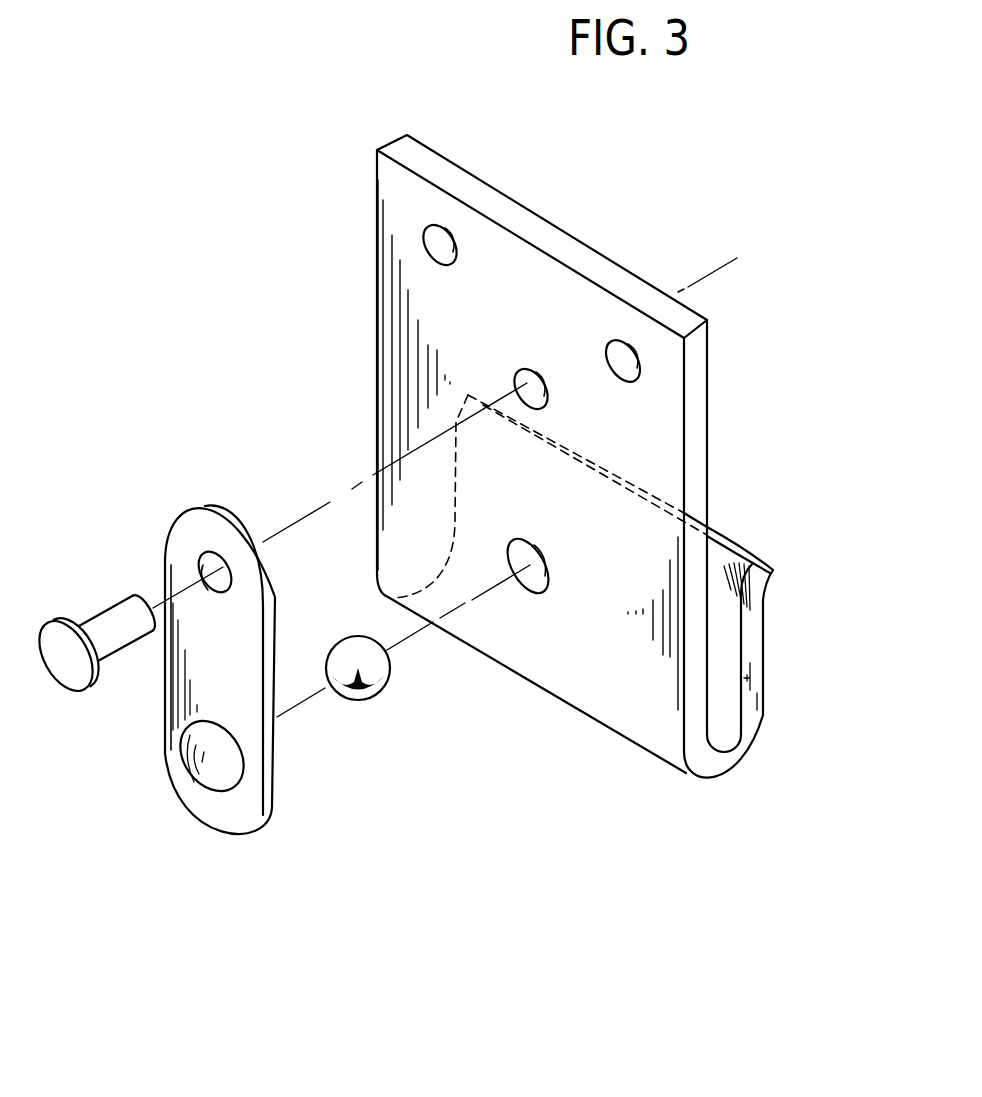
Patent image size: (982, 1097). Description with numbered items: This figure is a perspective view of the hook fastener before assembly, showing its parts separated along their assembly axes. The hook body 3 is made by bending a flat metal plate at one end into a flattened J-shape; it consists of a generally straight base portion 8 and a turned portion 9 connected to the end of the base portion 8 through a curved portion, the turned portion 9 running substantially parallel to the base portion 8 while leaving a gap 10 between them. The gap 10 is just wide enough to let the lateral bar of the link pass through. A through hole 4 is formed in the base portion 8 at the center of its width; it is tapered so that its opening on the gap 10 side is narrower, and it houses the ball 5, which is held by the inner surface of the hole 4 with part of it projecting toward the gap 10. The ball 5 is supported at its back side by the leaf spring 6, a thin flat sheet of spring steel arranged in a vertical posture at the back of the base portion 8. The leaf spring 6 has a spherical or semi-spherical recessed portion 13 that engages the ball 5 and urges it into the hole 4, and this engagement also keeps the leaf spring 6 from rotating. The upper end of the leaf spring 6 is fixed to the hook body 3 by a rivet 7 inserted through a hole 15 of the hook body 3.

The hook body 3 is at (663, 740).
The through hole 4 is at (528, 593).
The ball 5 is at (363, 697).
The leaf spring 6 is at (183, 787).
The rivet 7 is at (117, 617).
The base portion 8 is at (698, 443).
The turned portion 9 is at (753, 650).
The gap 10 is at (728, 713).
The recessed portion 13 is at (247, 767).
The hole 15 is at (515, 383).